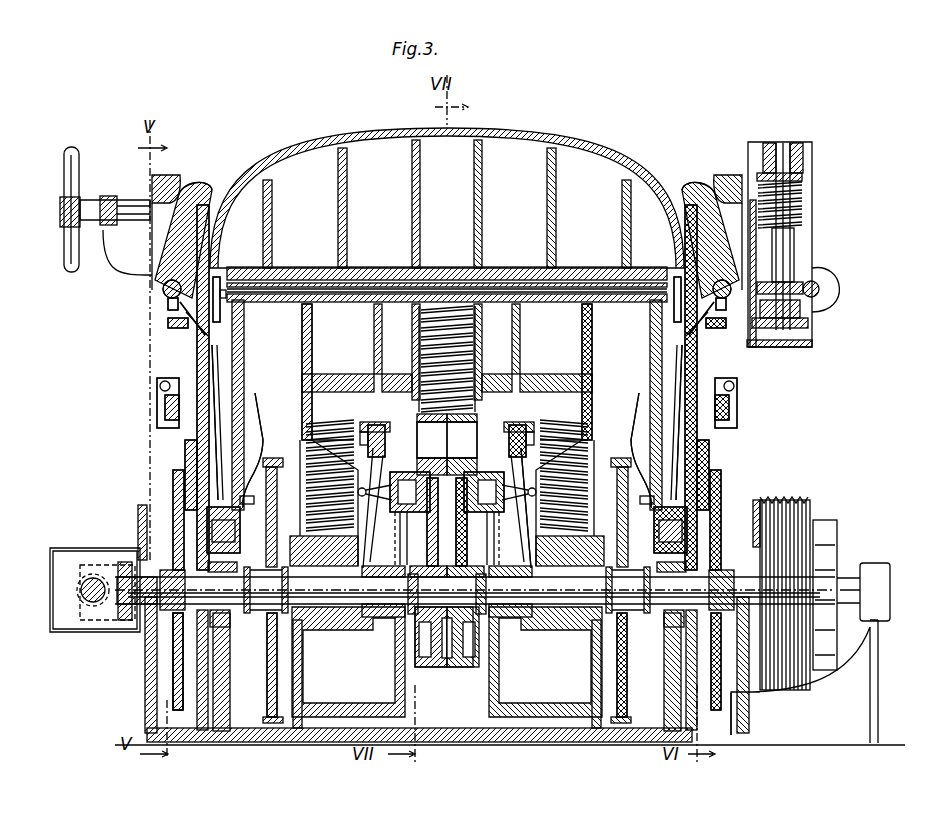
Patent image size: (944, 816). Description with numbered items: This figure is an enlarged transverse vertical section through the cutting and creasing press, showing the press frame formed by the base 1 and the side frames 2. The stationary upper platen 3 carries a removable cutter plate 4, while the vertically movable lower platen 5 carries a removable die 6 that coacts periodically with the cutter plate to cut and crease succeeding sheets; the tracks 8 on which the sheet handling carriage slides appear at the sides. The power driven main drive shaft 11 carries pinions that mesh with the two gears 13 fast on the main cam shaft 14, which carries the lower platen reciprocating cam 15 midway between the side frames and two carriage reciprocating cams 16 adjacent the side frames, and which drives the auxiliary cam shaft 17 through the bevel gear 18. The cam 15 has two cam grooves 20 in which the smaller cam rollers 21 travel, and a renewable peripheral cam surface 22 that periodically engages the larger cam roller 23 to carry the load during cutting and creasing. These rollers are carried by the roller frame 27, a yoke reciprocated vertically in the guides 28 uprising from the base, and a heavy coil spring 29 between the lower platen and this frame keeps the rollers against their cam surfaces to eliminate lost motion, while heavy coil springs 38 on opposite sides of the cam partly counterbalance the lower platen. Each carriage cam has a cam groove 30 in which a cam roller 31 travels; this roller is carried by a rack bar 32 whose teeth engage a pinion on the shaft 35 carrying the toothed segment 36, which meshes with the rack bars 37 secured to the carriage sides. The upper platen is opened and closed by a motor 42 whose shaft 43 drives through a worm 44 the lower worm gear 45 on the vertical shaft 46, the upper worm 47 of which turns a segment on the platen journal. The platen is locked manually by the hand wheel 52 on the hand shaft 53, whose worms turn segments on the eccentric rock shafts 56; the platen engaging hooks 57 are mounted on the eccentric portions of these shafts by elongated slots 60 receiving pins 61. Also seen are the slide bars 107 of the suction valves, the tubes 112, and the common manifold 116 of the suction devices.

The base 1 is at (468, 738).
The side frames 2 is at (155, 498).
The stationary upper platen 3 is at (487, 150).
The removable cutter plate 4 is at (380, 278).
The vertically movable lower platen 5 is at (447, 308).
The removable die 6 is at (576, 290).
The tracks 8 is at (220, 298).
The main drive shaft 11 is at (862, 585).
The gears 13 is at (270, 720).
The main cam shaft 14 is at (475, 590).
The lower platen reciprocating cam 15 is at (449, 662).
The carriage reciprocating cams 16 is at (178, 672).
The auxiliary cam shaft 17 is at (74, 598).
The bevel gear 18 is at (128, 622).
The cam grooves 20 is at (415, 652).
The smaller cam rollers 21 is at (426, 505).
The peripheral cam surface 22 is at (420, 470).
The larger cam roller 23 is at (447, 440).
The roller frame 27 is at (480, 470).
The guides 28 is at (525, 448).
The heavy coil spring 29 is at (445, 330).
The cam groove 30 is at (176, 640).
The cam roller 31 is at (176, 481).
The rack bar 32 is at (186, 453).
The shaft 35 is at (222, 350).
The toothed segment 36 is at (212, 362).
The rack bars 37 is at (226, 316).
The heavy coil springs 38 is at (322, 470).
The motor 42 is at (846, 292).
The motor shaft 43 is at (820, 289).
The worm 44 is at (806, 286).
The lower worm gear 45 is at (800, 282).
The vertical shaft 46 is at (783, 142).
The upper worm 47 is at (805, 192).
The hand wheel 52 is at (72, 148).
The hand shaft 53 is at (118, 204).
The eccentric rock shafts 56 is at (163, 289).
The platen engaging hooks 57 is at (207, 190).
The circumferentially elongated slots 60 is at (168, 305).
The pins 61 is at (182, 304).
The slide bars 107 is at (451, 491).
The tubes 112 is at (447, 450).
The common manifold 116 is at (449, 530).